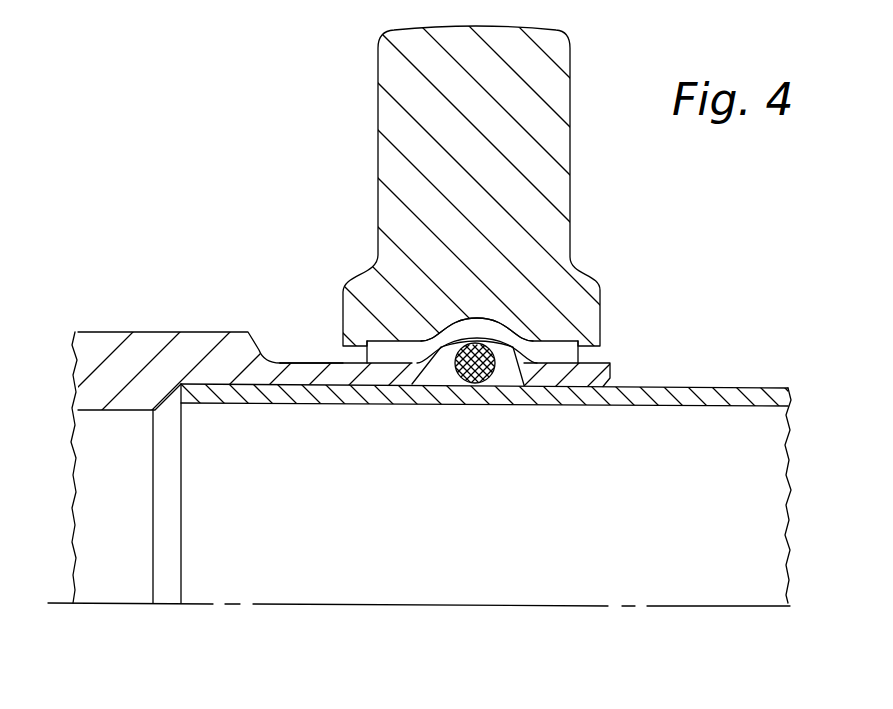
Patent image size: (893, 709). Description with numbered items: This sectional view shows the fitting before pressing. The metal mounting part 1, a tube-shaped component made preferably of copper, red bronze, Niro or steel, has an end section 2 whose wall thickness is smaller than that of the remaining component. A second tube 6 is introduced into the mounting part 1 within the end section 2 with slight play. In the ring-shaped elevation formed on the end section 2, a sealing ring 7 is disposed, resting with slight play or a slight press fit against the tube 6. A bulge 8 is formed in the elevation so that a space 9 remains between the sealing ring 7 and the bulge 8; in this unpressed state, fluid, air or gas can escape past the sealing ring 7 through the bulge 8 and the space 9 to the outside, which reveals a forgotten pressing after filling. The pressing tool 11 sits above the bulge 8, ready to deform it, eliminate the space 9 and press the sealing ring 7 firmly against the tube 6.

The mounting part 1 is at (123, 365).
The end section 2 is at (303, 375).
The tube 6 is at (723, 398).
The sealing ring 7 is at (471, 388).
The bulge 8 is at (460, 332).
The space 9 is at (515, 336).
The pressing tool 11 is at (538, 85).